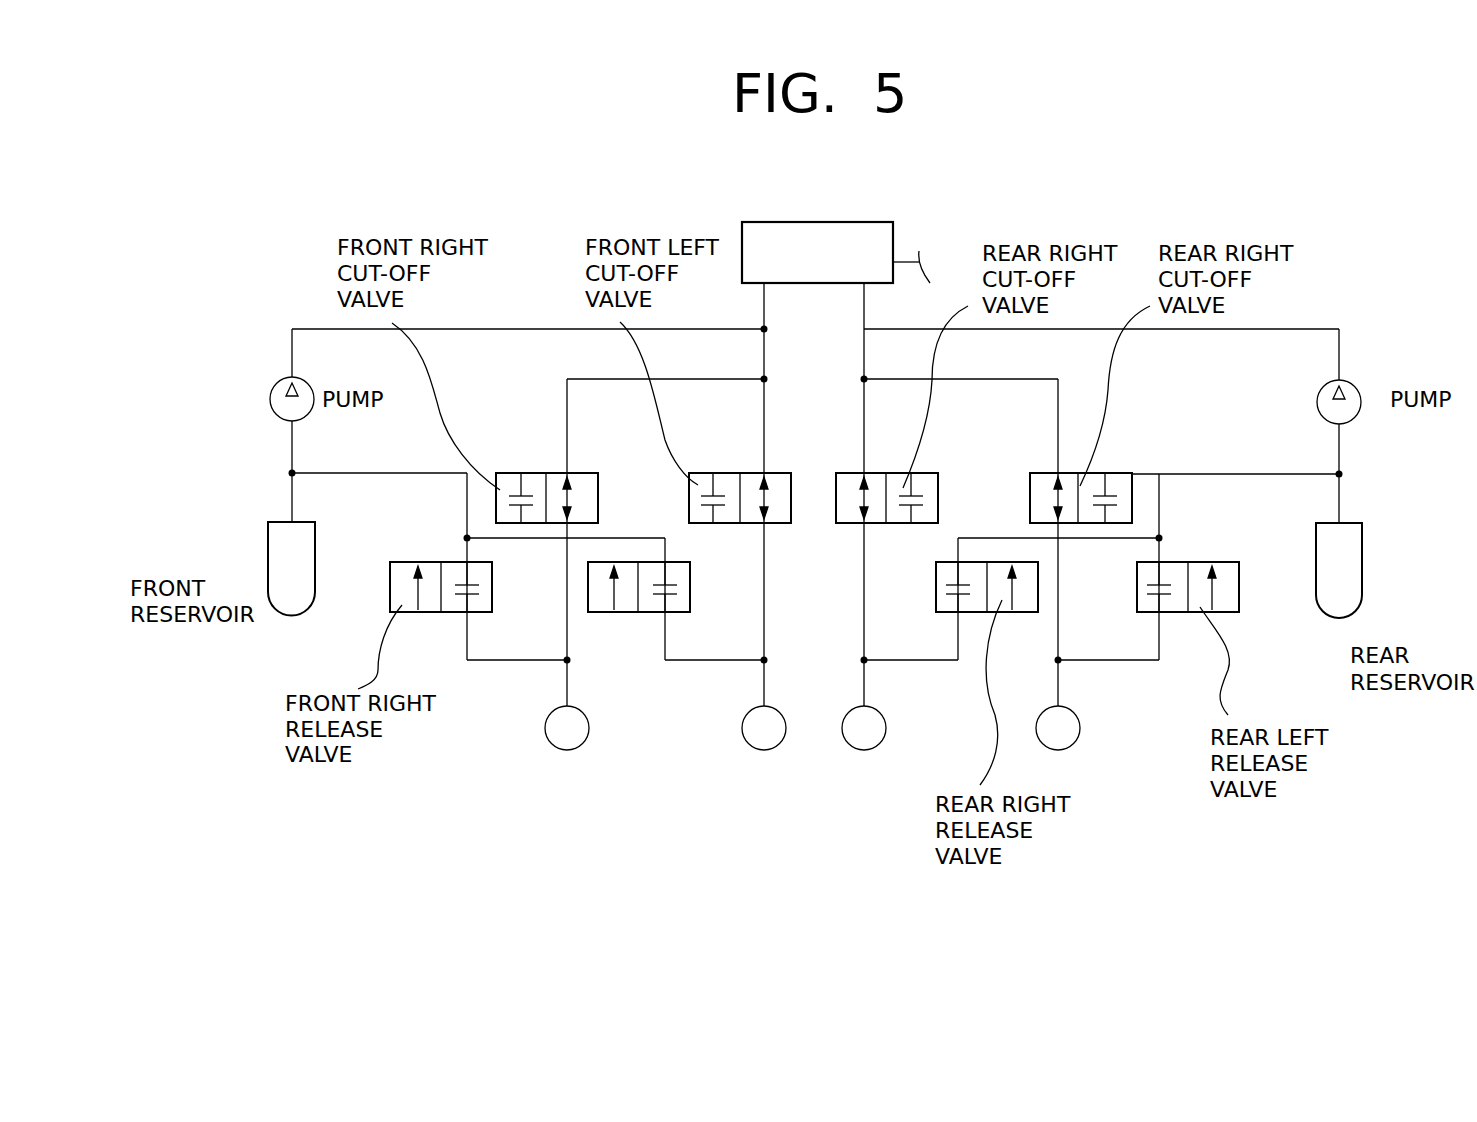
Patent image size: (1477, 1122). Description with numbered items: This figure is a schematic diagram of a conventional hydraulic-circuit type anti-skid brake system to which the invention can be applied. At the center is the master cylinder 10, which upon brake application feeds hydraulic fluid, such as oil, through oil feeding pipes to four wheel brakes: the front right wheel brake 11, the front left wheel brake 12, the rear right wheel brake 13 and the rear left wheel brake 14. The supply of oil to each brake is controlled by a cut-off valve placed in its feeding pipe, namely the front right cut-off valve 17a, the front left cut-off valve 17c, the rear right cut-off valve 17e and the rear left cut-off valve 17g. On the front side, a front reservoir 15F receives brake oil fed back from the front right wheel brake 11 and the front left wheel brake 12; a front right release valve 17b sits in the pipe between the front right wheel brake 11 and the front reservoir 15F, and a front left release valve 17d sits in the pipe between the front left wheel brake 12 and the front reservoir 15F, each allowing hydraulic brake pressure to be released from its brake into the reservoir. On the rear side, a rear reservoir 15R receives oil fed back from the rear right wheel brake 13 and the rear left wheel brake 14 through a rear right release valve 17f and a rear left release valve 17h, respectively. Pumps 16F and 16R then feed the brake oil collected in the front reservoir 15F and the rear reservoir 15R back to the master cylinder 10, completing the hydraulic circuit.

The master cylinder 10 is at (860, 221).
The front right wheel brake 11 is at (555, 748).
The front left wheel brake 12 is at (751, 748).
The rear right wheel brake 13 is at (856, 750).
The rear left wheel brake 14 is at (1072, 748).
The front reservoir 15F is at (285, 598).
The rear reservoir 15R is at (1333, 607).
The pump 16F is at (308, 385).
The pump 16R is at (1355, 387).
The front right cut-off valve 17a is at (594, 473).
The front right release valve 17b is at (493, 590).
The front left cut-off valve 17c is at (788, 473).
The front left release valve 17d is at (691, 590).
The rear right cut-off valve 17e is at (938, 497).
The rear right release valve 17f is at (1020, 613).
The rear left cut-off valve 17g is at (1133, 490).
The rear left release valve 17h is at (1241, 578).